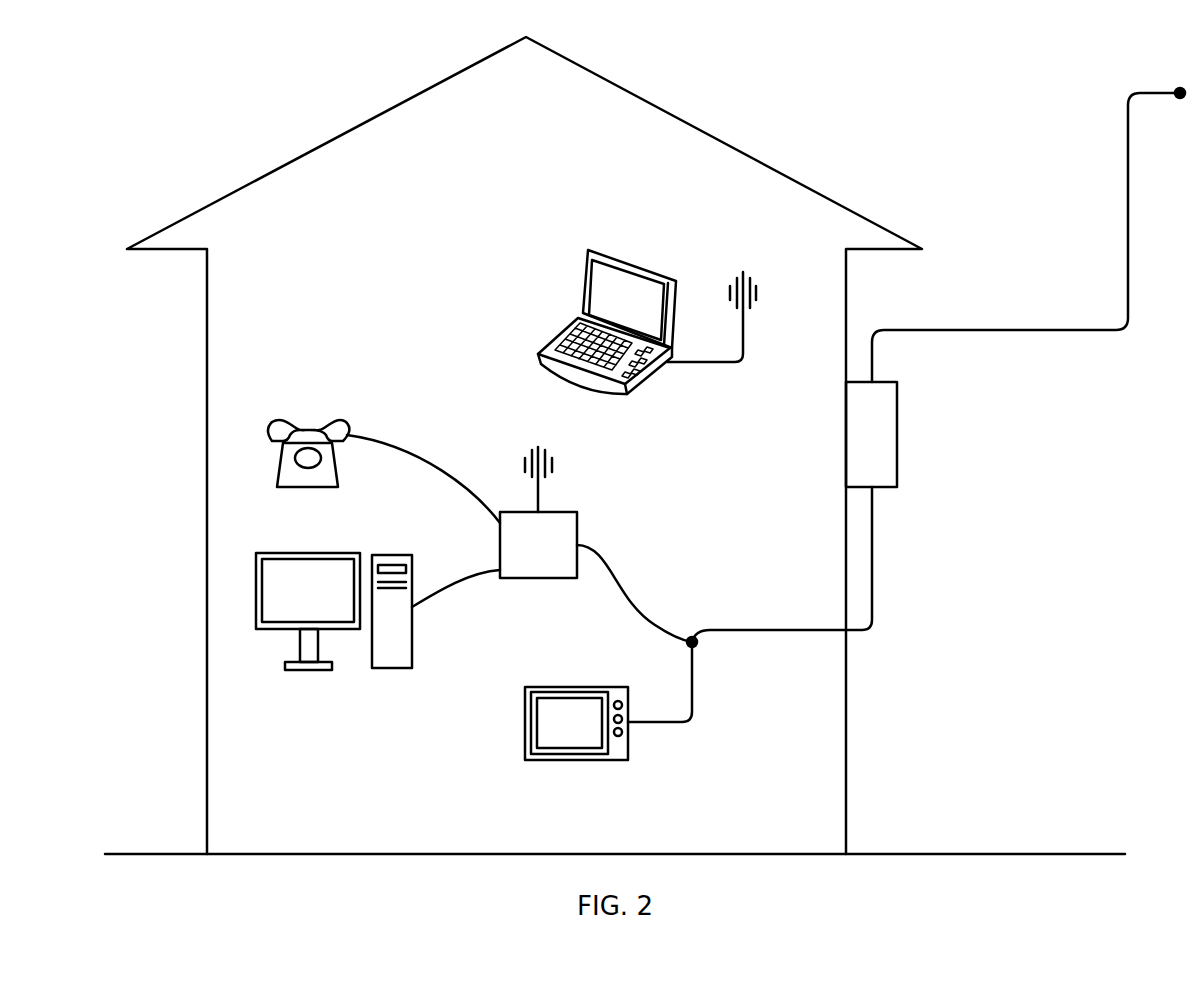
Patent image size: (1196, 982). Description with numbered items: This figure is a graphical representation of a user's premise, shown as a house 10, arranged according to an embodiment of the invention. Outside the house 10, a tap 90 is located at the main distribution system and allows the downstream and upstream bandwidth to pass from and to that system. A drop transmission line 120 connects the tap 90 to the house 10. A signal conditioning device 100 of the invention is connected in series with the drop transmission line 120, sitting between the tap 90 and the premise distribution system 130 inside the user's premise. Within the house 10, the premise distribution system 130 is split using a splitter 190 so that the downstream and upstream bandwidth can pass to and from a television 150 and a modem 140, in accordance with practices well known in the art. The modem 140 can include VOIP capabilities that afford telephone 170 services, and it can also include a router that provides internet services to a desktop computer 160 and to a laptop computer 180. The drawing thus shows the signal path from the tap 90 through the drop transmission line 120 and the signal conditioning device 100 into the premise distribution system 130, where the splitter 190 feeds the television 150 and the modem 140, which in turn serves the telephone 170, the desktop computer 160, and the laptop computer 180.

The house 10 is at (850, 85).
The tap 90 is at (1180, 92).
The signal conditioning device 100 is at (897, 420).
The drop transmission line 120 is at (1128, 223).
The premise distribution system 130 is at (799, 703).
The modem 140 is at (577, 513).
The television 150 is at (577, 760).
The desktop computer 160 is at (305, 670).
The telephone 170 is at (300, 418).
The laptop computer 180 is at (608, 252).
The splitter 190 is at (694, 644).